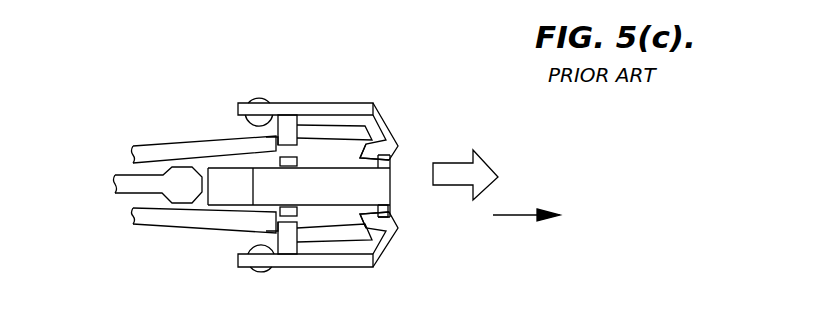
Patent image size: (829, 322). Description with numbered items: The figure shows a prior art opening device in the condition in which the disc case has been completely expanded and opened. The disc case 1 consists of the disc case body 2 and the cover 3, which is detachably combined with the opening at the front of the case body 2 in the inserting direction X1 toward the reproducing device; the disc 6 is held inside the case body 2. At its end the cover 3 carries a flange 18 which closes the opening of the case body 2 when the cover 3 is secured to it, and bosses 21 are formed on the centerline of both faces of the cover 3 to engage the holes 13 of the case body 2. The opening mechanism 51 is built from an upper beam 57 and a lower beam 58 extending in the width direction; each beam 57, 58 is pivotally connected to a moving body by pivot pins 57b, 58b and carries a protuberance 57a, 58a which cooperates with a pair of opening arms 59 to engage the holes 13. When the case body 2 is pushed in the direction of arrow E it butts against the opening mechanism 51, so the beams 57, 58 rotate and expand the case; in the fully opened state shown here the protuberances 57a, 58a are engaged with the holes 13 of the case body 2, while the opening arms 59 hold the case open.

The disc case 1 is at (112, 124).
The disc case body 2 is at (160, 144).
The cover 3 is at (390, 178).
The disc 6 is at (125, 183).
The holes 13 is at (273, 140).
The flange 18 is at (384, 213).
The bosses 21 is at (296, 162).
The opening mechanism 51 is at (377, 110).
The upper beam 57 is at (323, 108).
The protuberance 57a is at (288, 122).
The pivot pin 57b is at (255, 99).
The lower beam 58 is at (337, 266).
The protuberance 58a is at (287, 250).
The pivot pin 58b is at (258, 272).
The opening arms 59 is at (393, 145).
The arrow E is at (488, 166).
The inserting direction X1 is at (514, 218).